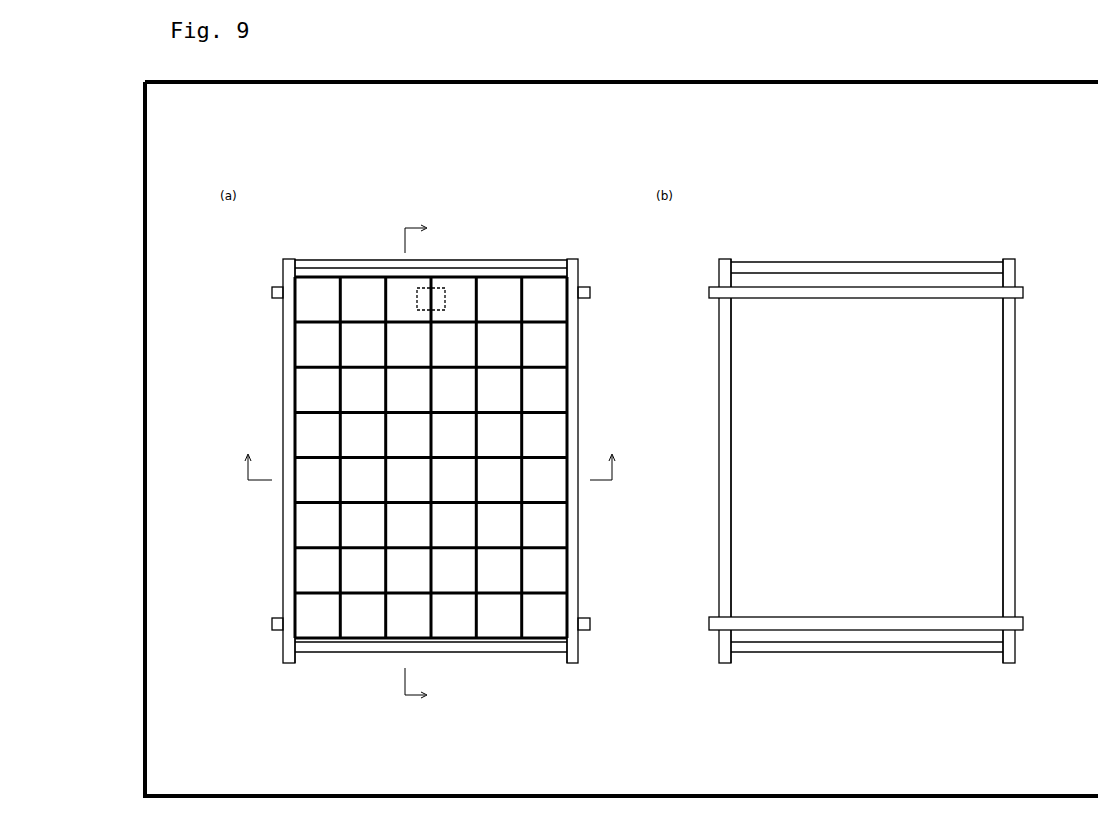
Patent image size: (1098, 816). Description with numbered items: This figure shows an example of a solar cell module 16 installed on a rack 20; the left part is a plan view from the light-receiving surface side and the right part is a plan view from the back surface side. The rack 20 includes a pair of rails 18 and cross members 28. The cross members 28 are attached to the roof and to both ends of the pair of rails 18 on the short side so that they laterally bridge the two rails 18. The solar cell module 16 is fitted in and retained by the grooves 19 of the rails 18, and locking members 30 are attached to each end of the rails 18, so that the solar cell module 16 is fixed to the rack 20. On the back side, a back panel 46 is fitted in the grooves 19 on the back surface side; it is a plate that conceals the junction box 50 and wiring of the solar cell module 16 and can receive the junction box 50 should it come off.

The solar cell module 16 is at (543, 290).
The rail 18 is at (292, 367).
The groove 19 is at (286, 407).
The rack 20 is at (286, 262).
The cross member 28 is at (590, 295).
The locking member 30 is at (345, 264).
The back panel 46 is at (968, 472).
The junction box 50 is at (446, 296).